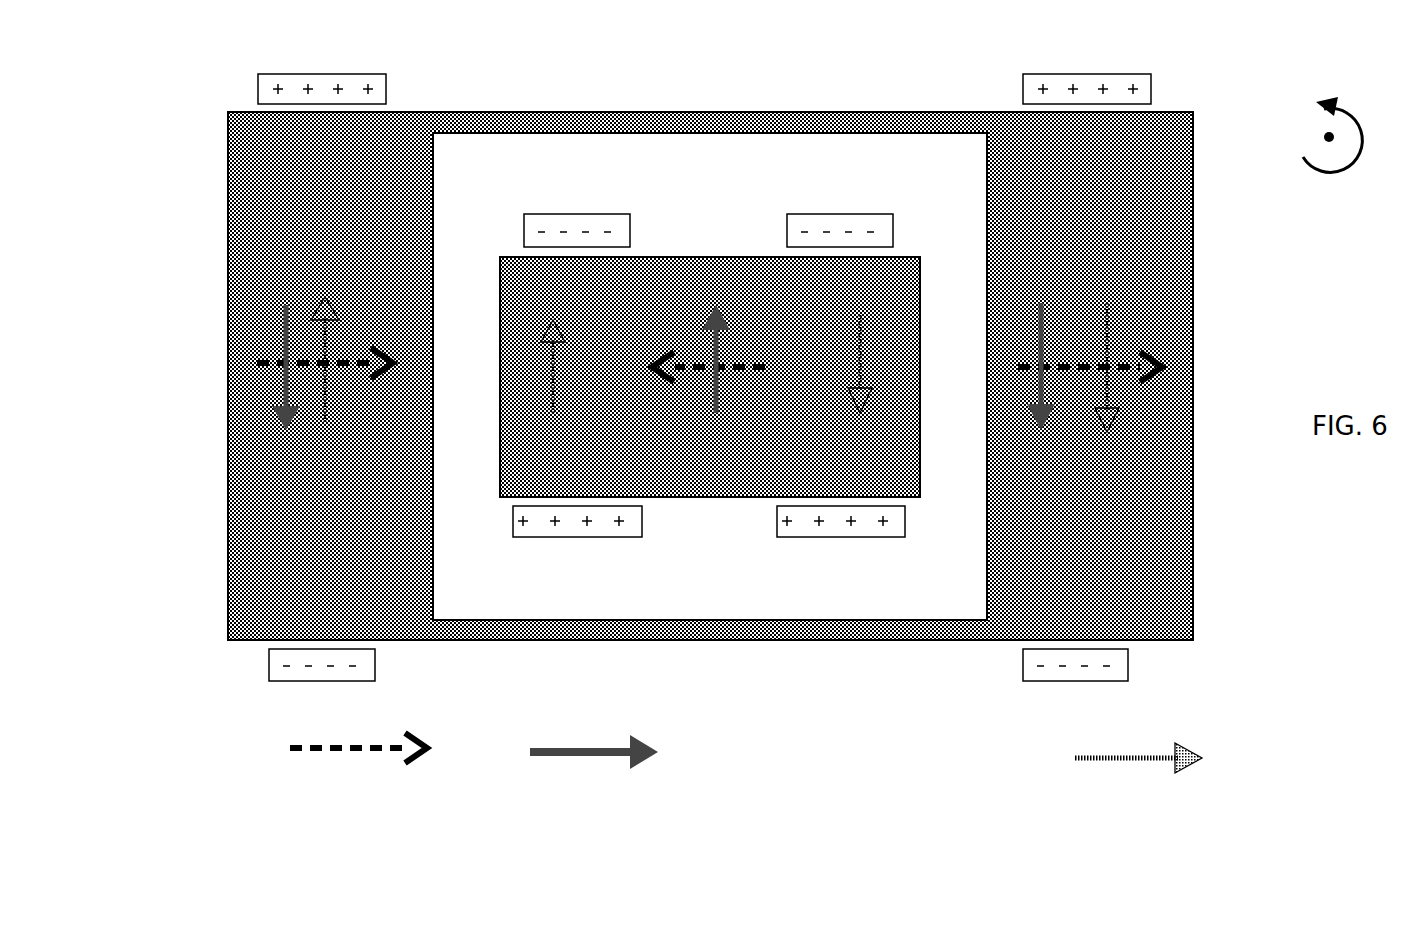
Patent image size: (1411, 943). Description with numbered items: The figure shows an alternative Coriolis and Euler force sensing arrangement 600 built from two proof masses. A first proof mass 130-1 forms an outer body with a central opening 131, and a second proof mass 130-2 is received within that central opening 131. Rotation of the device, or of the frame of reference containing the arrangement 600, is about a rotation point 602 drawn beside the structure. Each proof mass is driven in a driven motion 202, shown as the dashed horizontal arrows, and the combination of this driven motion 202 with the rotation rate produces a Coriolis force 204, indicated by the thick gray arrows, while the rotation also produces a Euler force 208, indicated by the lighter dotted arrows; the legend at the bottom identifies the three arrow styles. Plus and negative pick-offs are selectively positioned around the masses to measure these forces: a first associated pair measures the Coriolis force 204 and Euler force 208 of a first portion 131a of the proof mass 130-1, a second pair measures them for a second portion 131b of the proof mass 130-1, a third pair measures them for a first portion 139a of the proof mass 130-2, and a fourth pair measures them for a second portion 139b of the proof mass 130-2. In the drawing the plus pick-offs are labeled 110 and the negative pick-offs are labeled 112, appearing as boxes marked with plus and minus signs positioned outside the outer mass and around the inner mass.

The Coriolis and Euler force sensing arrangement 600 is at (192, 162).
The positive sense capacitor electrode 110 is at (386, 90).
The negative sense capacitor electrode 112 is at (612, 232).
The proof mass 130-1 is at (268, 514).
The proof mass 130-2 is at (922, 460).
The central opening 131 is at (656, 170).
The first portion 131a is at (308, 542).
The second portion 131b is at (1142, 565).
The first portion 139a is at (538, 307).
The second portion 139b is at (898, 380).
The driven motion 202 is at (260, 365).
The Coriolis force 204 is at (288, 330).
The Euler force 208 is at (326, 392).
The rotation point 602 is at (1323, 137).